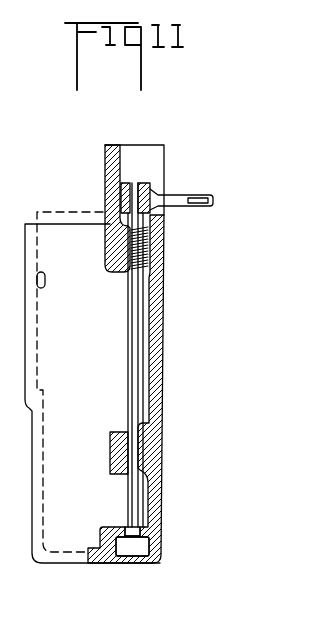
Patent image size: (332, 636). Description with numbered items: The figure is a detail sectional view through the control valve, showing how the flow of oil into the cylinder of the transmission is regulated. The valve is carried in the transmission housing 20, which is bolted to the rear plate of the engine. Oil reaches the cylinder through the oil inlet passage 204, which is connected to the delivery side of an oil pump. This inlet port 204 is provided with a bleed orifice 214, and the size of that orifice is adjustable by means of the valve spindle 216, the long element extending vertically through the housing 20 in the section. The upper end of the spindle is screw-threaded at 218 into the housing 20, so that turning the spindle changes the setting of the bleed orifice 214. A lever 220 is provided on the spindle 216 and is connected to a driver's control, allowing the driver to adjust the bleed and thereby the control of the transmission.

The transmission housing 20 is at (166, 279).
The screw-threaded upper end of valve spindle 218 is at (166, 248).
The lever 220 is at (205, 194).
The valve spindle 216 is at (136, 450).
The bleed orifice 214 is at (157, 531).
The oil inlet passage 204 is at (137, 548).